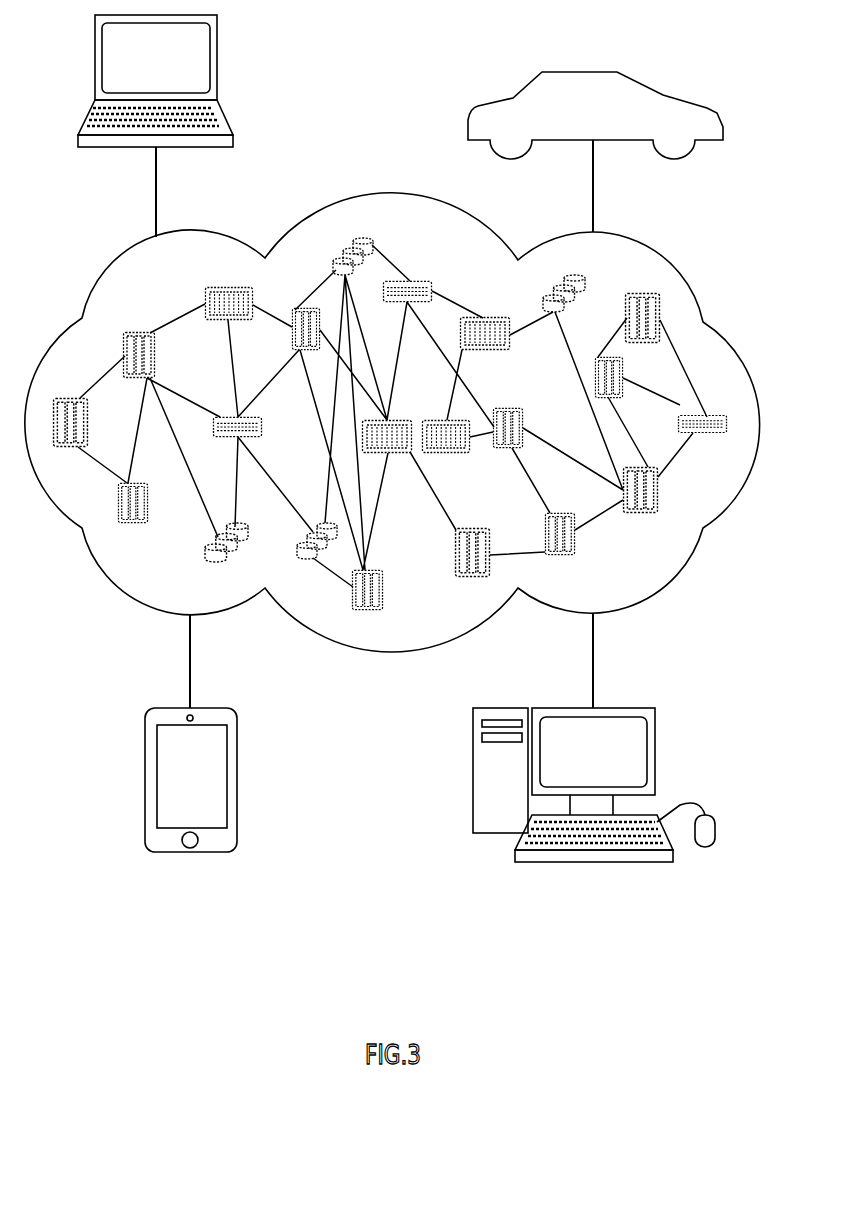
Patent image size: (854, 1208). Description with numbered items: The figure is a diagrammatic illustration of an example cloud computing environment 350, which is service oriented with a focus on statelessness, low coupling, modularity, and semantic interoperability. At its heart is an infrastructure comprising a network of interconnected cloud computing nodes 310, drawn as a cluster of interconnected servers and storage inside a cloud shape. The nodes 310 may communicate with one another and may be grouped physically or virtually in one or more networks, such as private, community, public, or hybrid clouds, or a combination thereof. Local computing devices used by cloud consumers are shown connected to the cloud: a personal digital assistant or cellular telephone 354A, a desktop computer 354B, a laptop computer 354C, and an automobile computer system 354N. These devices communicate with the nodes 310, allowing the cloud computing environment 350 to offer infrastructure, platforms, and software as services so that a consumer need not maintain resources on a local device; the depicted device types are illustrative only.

The cloud computing nodes 310 is at (720, 462).
The cloud computing environment 350 is at (733, 347).
The personal digital assistant or cellular telephone 354A is at (238, 763).
The desktop computer 354B is at (655, 730).
The laptop computer 354C is at (217, 62).
The automobile computer system 354N is at (557, 70).